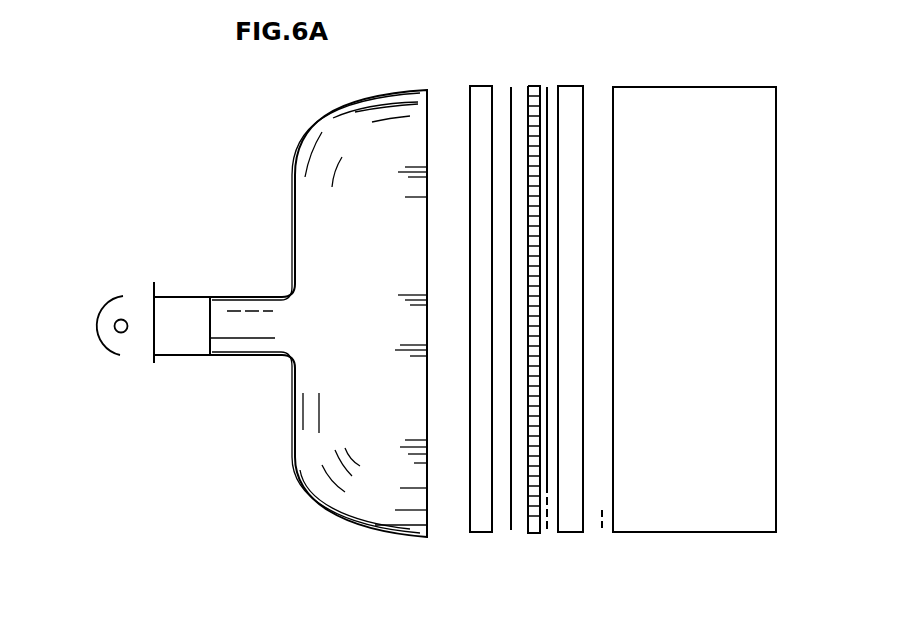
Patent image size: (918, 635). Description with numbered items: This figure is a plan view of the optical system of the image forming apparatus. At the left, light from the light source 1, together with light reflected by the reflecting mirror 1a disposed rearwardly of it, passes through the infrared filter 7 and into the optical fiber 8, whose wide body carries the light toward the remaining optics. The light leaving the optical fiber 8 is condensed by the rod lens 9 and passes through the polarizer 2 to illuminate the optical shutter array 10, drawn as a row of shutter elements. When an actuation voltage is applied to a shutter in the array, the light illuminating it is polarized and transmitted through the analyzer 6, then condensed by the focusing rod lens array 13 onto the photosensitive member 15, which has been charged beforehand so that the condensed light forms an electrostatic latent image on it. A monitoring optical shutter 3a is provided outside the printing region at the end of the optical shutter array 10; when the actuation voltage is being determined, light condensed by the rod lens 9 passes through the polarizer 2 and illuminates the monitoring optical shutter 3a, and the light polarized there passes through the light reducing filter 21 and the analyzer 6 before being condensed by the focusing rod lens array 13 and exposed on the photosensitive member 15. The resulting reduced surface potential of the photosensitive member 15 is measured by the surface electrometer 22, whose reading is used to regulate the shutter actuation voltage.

The light source 1 is at (124, 333).
The reflecting mirror 1a is at (124, 295).
The infrared filter 7 is at (155, 290).
The optical fiber 8 is at (308, 503).
The rod lens 9 is at (483, 85).
The polarizer 2 is at (510, 531).
The optical shutter array 10 is at (537, 85).
The monitoring optical shutter 3a is at (530, 534).
The light reducing filter 21 is at (547, 532).
The focusing rod lens array 13 is at (583, 85).
The analyzer 6 is at (552, 533).
The surface electrometer 22 is at (602, 531).
The photosensitive member 15 is at (776, 131).